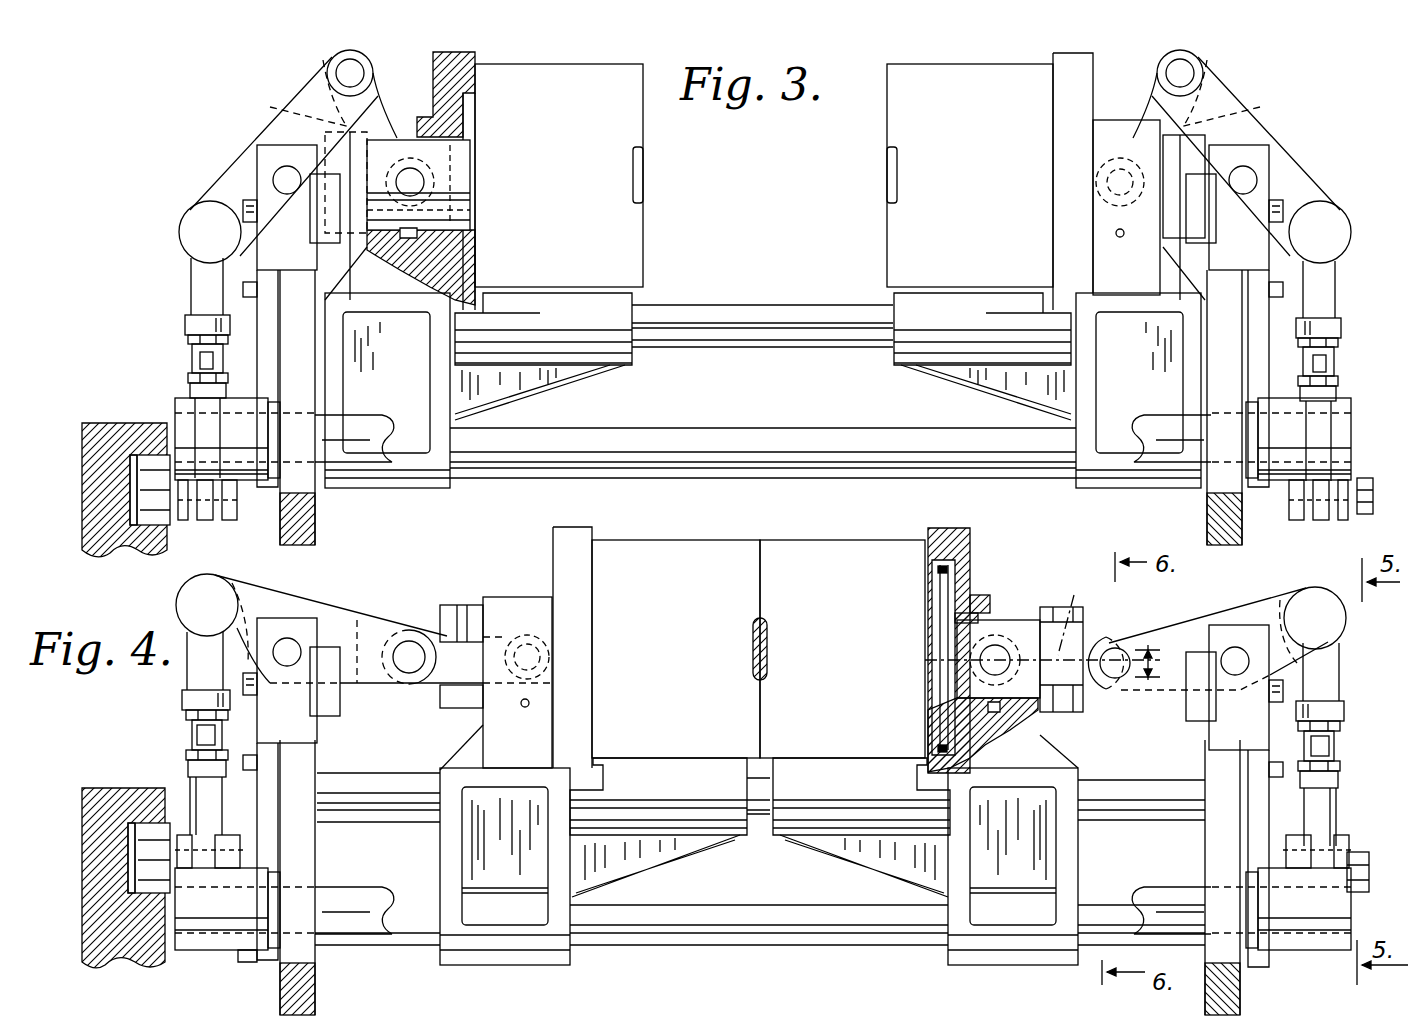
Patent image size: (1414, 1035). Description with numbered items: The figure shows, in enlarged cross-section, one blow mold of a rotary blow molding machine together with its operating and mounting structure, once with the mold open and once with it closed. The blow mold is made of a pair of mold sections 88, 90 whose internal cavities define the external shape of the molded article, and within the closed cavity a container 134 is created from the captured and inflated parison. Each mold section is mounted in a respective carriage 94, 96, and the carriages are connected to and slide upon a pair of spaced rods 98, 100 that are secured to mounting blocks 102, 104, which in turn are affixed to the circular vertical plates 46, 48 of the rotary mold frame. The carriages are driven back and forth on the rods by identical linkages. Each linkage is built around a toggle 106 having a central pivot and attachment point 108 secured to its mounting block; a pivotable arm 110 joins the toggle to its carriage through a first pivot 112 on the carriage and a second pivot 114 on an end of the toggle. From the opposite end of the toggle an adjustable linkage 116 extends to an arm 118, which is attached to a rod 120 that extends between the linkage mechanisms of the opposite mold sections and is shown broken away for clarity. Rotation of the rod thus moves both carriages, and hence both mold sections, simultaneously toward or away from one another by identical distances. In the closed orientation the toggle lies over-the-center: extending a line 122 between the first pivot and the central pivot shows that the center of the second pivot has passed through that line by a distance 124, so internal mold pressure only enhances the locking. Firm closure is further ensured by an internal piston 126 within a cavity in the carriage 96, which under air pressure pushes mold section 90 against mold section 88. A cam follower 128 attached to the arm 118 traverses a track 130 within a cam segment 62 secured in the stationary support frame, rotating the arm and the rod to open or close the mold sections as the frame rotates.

In FIG. 3, the circular vertical plate 46 is at (310, 517).
In FIG. 4, the circular vertical plate 46 is at (313, 968).
In FIG. 3, the circular vertical plate 48 is at (1208, 510).
In FIG. 4, the circular vertical plate 48 is at (1217, 835).
In FIG. 3, the cam segment 62 is at (97, 427).
In FIG. 4, the cam segment 62 is at (100, 790).
In FIG. 3, the mold section 88 is at (594, 137).
In FIG. 4, the mold section 88 is at (689, 607).
In FIG. 3, the mold section 90 is at (969, 132).
In FIG. 4, the mold section 90 is at (846, 602).
In FIG. 3, the carriage 94 is at (475, 79).
In FIG. 4, the carriage 94 is at (540, 600).
In FIG. 3, the carriage 96 is at (1063, 97).
In FIG. 4, the carriage 96 is at (968, 583).
In FIG. 3, the spaced rod 98 is at (770, 320).
In FIG. 4, the spaced rod 98 is at (762, 822).
In FIG. 3, the spaced rod 100 is at (765, 440).
In FIG. 4, the spaced rod 100 is at (707, 887).
In FIG. 3, the mounting block 102 is at (270, 253).
In FIG. 4, the mounting block 102 is at (300, 727).
In FIG. 3, the mounting block 104 is at (1228, 260).
In FIG. 4, the mounting block 104 is at (1217, 738).
In FIG. 3, the toggle 106 is at (280, 118).
In FIG. 4, the toggle 106 is at (373, 628).
In FIG. 3, the central pivot and attachment point 108 is at (280, 175).
In FIG. 4, the central pivot and attachment point 108 is at (288, 640).
In FIG. 3, the pivotable arm 110 is at (373, 102).
In FIG. 4, the pivotable arm 110 is at (453, 640).
In FIG. 3, the first pivot 112 is at (418, 186).
In FIG. 4, the first pivot 112 is at (533, 660).
In FIG. 3, the second pivot 114 is at (343, 73).
In FIG. 4, the second pivot 114 is at (408, 663).
In FIG. 3, the adjustable linkage 116 is at (193, 320).
In FIG. 4, the adjustable linkage 116 is at (197, 676).
In FIG. 3, the arm 118 is at (185, 522).
In FIG. 4, the arm 118 is at (198, 943).
In FIG. 3, the rod 120 is at (365, 427).
In FIG. 4, the rod 120 is at (348, 895).
In FIG. 4, the line 122 is at (1077, 613).
In FIG. 4, the distance 124 is at (1152, 646).
In FIG. 4, the internal piston 126 is at (940, 608).
In FIG. 3, the cam follower 128 is at (147, 497).
In FIG. 4, the cam follower 128 is at (133, 870).
In FIG. 3, the track 130 is at (152, 453).
In FIG. 4, the track 130 is at (155, 823).
In FIG. 4, the container 134 is at (752, 647).